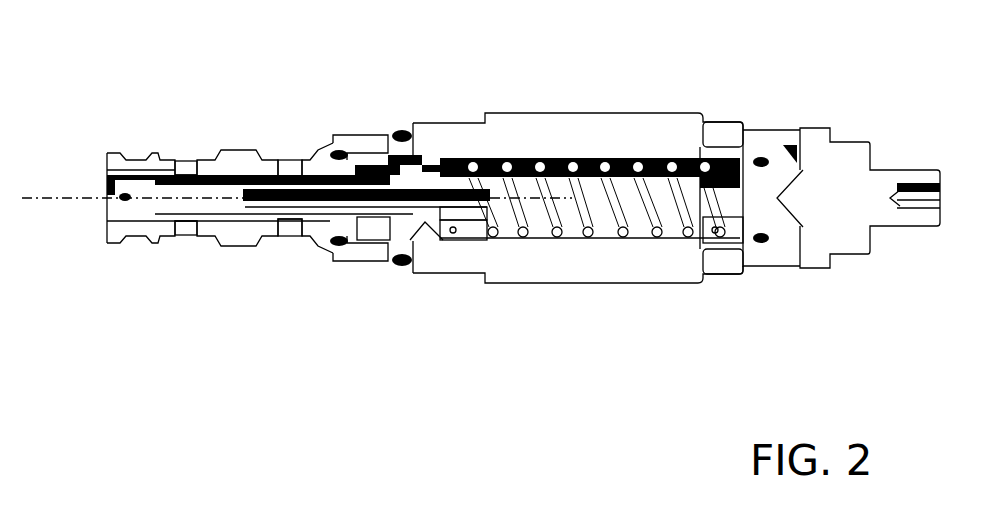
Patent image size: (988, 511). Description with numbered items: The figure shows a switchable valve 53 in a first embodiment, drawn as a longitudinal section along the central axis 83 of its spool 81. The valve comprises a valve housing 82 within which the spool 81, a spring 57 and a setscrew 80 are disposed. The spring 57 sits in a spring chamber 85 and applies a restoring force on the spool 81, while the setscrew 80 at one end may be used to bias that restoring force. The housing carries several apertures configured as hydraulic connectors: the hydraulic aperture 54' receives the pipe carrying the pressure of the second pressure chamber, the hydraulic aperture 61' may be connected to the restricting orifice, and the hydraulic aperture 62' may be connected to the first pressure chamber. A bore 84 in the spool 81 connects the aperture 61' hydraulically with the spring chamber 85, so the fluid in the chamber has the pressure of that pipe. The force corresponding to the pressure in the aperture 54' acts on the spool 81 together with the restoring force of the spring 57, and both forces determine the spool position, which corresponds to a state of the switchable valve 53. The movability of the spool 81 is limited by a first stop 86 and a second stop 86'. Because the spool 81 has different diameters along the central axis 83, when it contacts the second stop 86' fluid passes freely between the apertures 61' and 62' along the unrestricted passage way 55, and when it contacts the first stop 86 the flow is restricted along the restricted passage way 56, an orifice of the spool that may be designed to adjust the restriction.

The switchable valve 53 is at (702, 67).
The hydraulic aperture 54' is at (197, 217).
The unrestricted passage way 55 is at (230, 175).
The restricted passage way 56 is at (280, 173).
The spring 57 is at (777, 128).
The hydraulic aperture 61' is at (153, 248).
The hydraulic aperture 62' is at (339, 230).
The setscrew 80 is at (850, 200).
The spool 81 is at (412, 223).
The valve housing 82 is at (623, 270).
The central axis 83 is at (72, 195).
The bore 84 is at (333, 210).
The spring chamber 85 is at (502, 225).
The first stop 86 is at (394, 172).
The second stop 86' is at (455, 167).